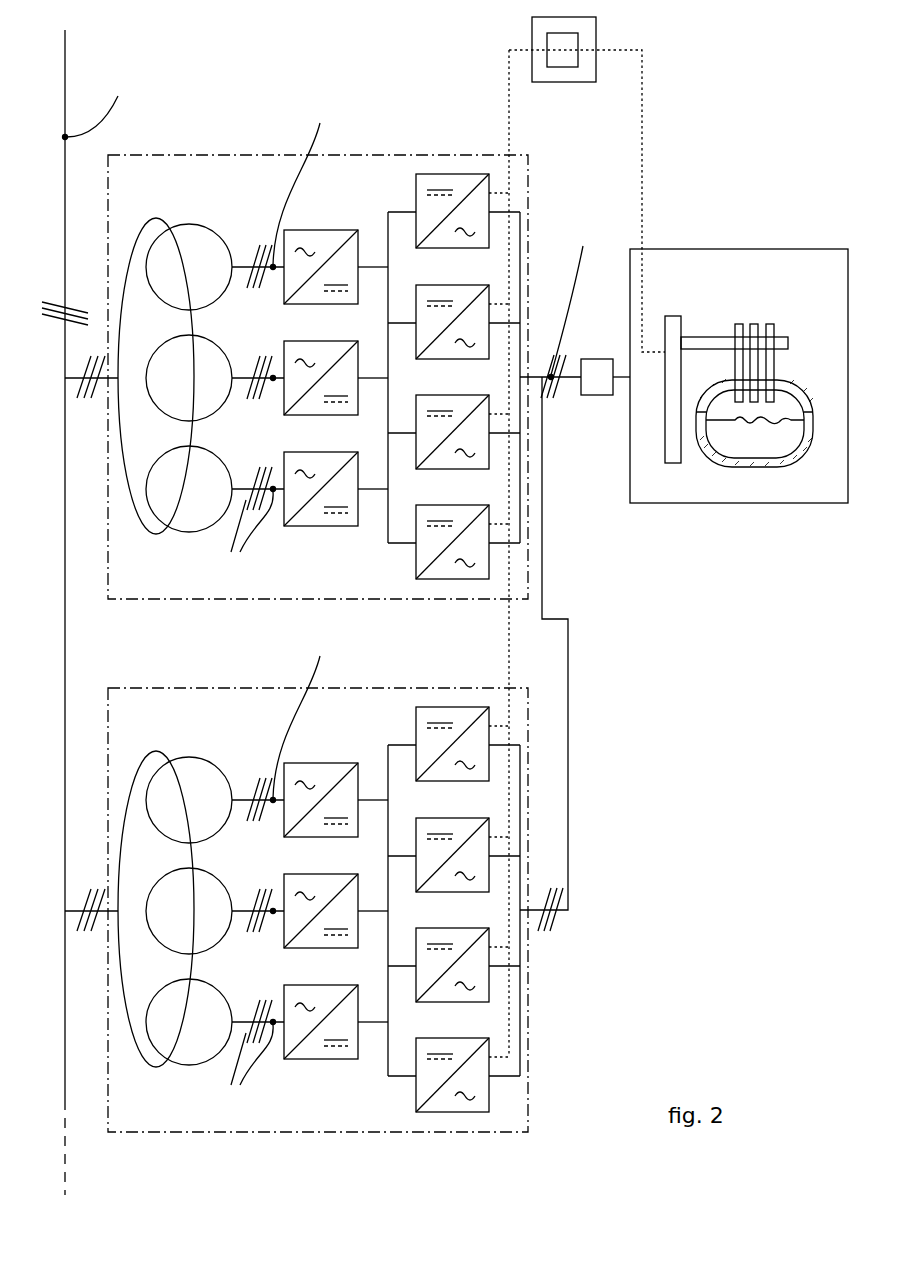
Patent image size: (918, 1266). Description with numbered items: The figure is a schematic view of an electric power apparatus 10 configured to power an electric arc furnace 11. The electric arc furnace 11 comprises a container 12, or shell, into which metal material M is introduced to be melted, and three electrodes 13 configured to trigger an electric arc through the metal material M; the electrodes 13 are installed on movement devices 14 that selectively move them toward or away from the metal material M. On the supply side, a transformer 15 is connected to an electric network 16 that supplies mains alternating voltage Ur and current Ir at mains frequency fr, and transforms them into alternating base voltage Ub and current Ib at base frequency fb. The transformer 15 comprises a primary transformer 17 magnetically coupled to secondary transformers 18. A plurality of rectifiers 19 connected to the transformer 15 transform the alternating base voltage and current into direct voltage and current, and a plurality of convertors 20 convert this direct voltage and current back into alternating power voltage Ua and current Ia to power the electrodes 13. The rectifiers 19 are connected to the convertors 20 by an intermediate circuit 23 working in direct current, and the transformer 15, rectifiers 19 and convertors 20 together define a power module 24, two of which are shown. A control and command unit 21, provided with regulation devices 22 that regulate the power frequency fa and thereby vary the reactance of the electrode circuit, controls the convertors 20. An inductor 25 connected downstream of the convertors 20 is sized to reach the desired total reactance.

The electric power apparatus 10 is at (232, 46).
The electric arc furnace 11 is at (793, 278).
The container 12 is at (800, 452).
The electrodes 13 is at (737, 358).
The movement devices 14 is at (673, 455).
The transformer 15 is at (181, 210).
The electric network 16 is at (64, 196).
The primary transformer 17 is at (143, 229).
The secondary transformer 18 is at (221, 240).
The rectifiers 19 is at (334, 236).
The convertors 20 is at (445, 180).
The control and command unit 21 is at (597, 32).
The regulation devices 22 is at (561, 54).
The intermediate circuit 23 is at (386, 221).
The power module 24 is at (257, 154).
The inductor 25 is at (597, 380).
The metal material M is at (755, 452).